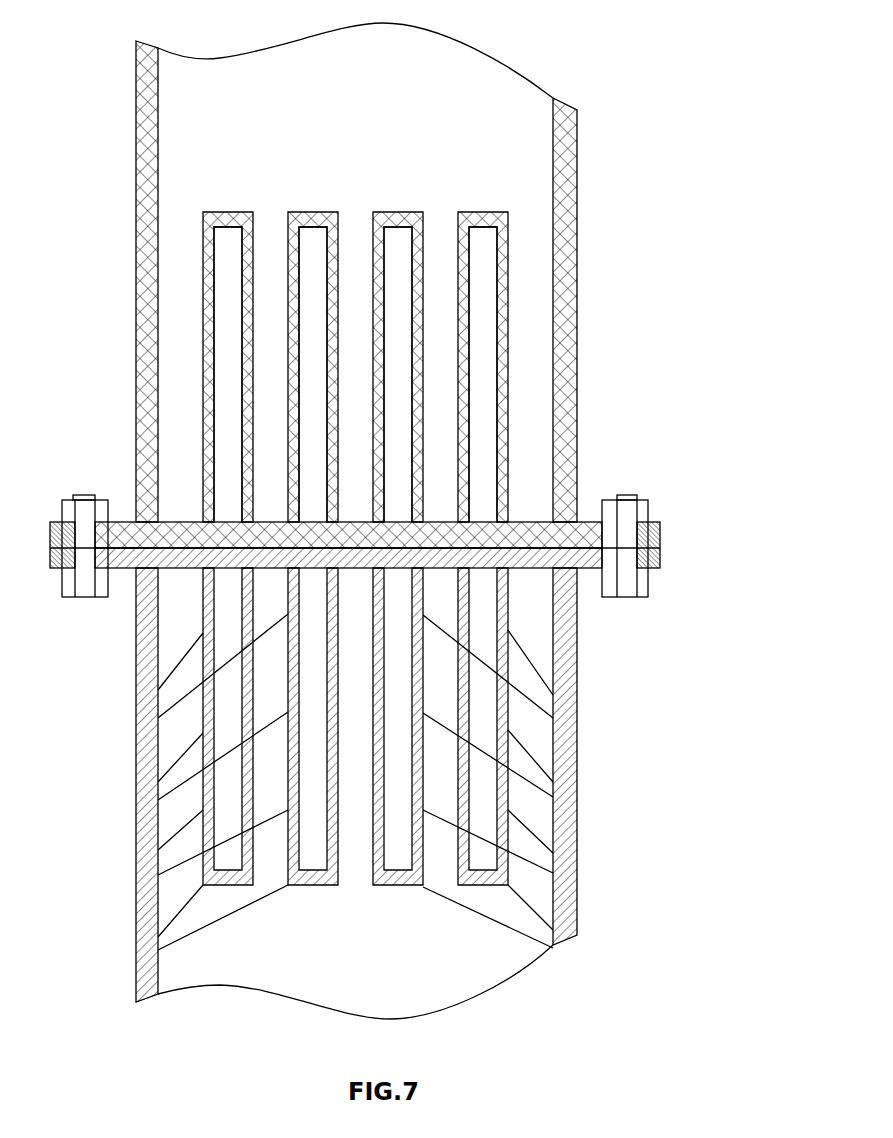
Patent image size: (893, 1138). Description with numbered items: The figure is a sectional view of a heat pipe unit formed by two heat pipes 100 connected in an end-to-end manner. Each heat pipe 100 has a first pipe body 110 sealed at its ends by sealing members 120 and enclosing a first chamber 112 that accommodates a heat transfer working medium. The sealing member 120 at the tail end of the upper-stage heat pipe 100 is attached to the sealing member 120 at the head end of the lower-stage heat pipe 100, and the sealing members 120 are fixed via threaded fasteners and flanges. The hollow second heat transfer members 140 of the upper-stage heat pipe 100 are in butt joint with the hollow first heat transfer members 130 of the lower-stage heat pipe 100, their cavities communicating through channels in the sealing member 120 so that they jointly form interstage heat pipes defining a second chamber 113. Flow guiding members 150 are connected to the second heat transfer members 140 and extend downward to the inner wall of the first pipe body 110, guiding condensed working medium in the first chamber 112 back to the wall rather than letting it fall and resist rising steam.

The heat pipe 100 is at (617, 778).
The first pipe body 110 is at (577, 650).
The first chamber 112 is at (530, 462).
The second chamber 113 is at (485, 445).
The sealing member 120 is at (540, 525).
The first heat transfer member 130 is at (512, 375).
The second heat transfer member 140 is at (513, 748).
The flow guiding member 150 is at (553, 768).